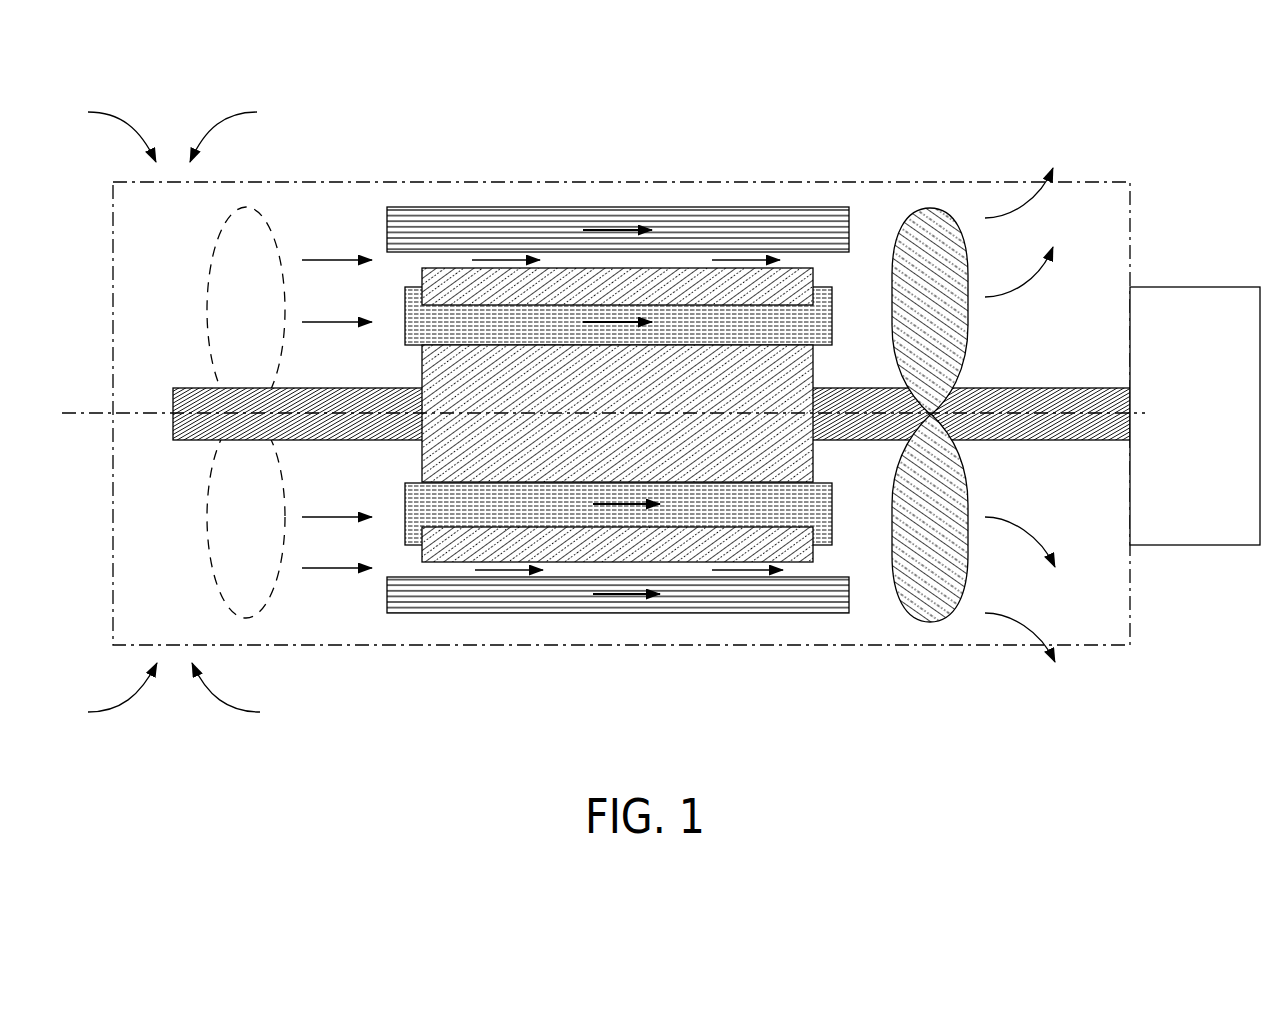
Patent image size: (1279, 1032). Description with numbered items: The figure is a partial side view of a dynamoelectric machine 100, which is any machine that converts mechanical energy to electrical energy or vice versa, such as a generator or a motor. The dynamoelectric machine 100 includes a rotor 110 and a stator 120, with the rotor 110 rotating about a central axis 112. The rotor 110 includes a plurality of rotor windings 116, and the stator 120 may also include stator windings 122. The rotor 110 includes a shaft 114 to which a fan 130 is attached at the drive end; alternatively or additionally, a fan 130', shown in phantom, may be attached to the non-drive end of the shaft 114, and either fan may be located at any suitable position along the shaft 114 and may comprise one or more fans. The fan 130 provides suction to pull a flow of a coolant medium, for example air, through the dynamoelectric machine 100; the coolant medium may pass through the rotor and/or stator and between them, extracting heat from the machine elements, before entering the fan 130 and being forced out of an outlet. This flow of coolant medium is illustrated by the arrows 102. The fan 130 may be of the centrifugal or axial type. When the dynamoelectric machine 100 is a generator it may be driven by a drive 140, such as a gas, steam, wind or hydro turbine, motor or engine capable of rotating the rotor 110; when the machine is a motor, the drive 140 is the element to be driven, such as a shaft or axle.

The dynamoelectric machine 100 is at (857, 182).
The arrows 102 is at (207, 120).
The rotor 110 is at (643, 428).
The central axis 112 is at (92, 408).
The shaft 114 is at (388, 428).
The rotor windings 116 is at (776, 338).
The stator 120 is at (473, 208).
The stator windings 122 is at (703, 228).
The fan 130 is at (982, 415).
The fan 130' is at (207, 412).
The drive 140 is at (1216, 430).